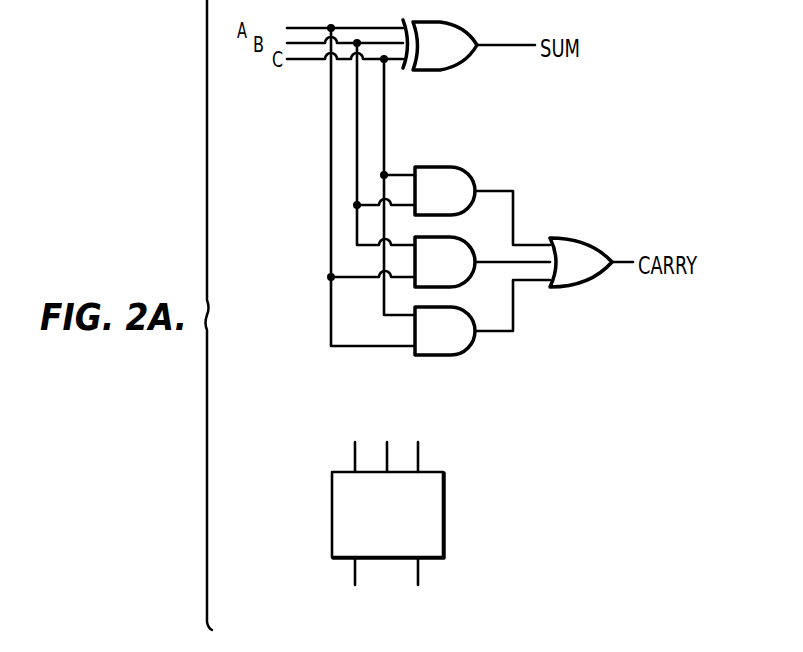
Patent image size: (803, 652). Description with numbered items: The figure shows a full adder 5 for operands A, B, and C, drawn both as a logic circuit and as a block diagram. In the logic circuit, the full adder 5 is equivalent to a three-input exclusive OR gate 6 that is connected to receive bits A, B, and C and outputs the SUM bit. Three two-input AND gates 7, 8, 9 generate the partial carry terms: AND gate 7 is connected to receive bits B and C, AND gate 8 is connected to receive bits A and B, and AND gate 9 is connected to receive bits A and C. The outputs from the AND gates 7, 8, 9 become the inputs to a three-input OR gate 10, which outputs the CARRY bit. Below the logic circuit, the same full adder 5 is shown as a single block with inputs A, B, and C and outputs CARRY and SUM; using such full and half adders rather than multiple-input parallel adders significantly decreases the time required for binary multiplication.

The full adder 5 is at (444, 545).
The exclusive OR gate 6 is at (466, 27).
The AND gate 7 is at (425, 166).
The AND gate 8 is at (471, 246).
The AND gate 9 is at (470, 345).
The OR gate 10 is at (590, 240).